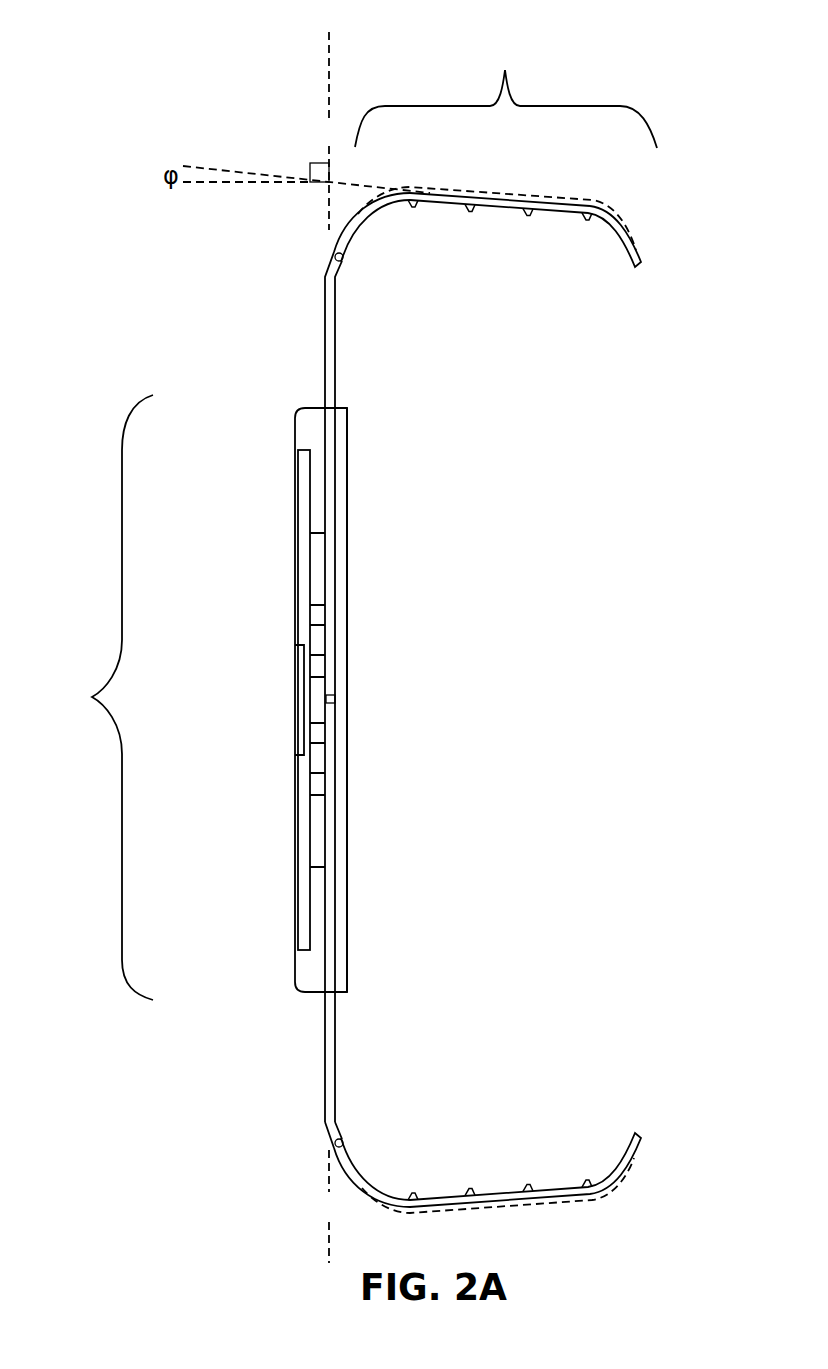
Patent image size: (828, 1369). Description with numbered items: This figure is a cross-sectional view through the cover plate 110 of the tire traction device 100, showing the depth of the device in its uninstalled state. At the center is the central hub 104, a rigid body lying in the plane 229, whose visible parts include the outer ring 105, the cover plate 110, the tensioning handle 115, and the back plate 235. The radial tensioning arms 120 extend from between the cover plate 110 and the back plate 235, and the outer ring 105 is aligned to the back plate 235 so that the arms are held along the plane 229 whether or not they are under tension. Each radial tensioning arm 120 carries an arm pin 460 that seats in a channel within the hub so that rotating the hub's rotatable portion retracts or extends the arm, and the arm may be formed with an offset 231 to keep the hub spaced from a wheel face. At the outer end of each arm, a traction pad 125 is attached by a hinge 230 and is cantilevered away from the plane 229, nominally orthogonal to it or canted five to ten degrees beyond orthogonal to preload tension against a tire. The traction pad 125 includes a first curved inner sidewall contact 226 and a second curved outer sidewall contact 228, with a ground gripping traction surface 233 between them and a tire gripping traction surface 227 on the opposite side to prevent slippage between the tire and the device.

The tire traction device 100 is at (196, 108).
The central hub 104 is at (256, 697).
The outer ring 105 is at (301, 430).
The cover plate 110 is at (300, 510).
The tensioning handle 115 is at (297, 703).
The radial tensioning arm 120 is at (330, 388).
The traction pad 125 is at (518, 167).
The first curved inner sidewall contact 226 is at (636, 238).
The tire gripping traction surface 227 is at (526, 220).
The second curved outer sidewall contact 228 is at (353, 230).
The plane 229 is at (328, 647).
The hinge 230 is at (334, 252).
The offset 231 is at (327, 1127).
The ground gripping traction surface 233 is at (452, 196).
The back plate 235 is at (342, 582).
The arm pin 460 is at (315, 614).